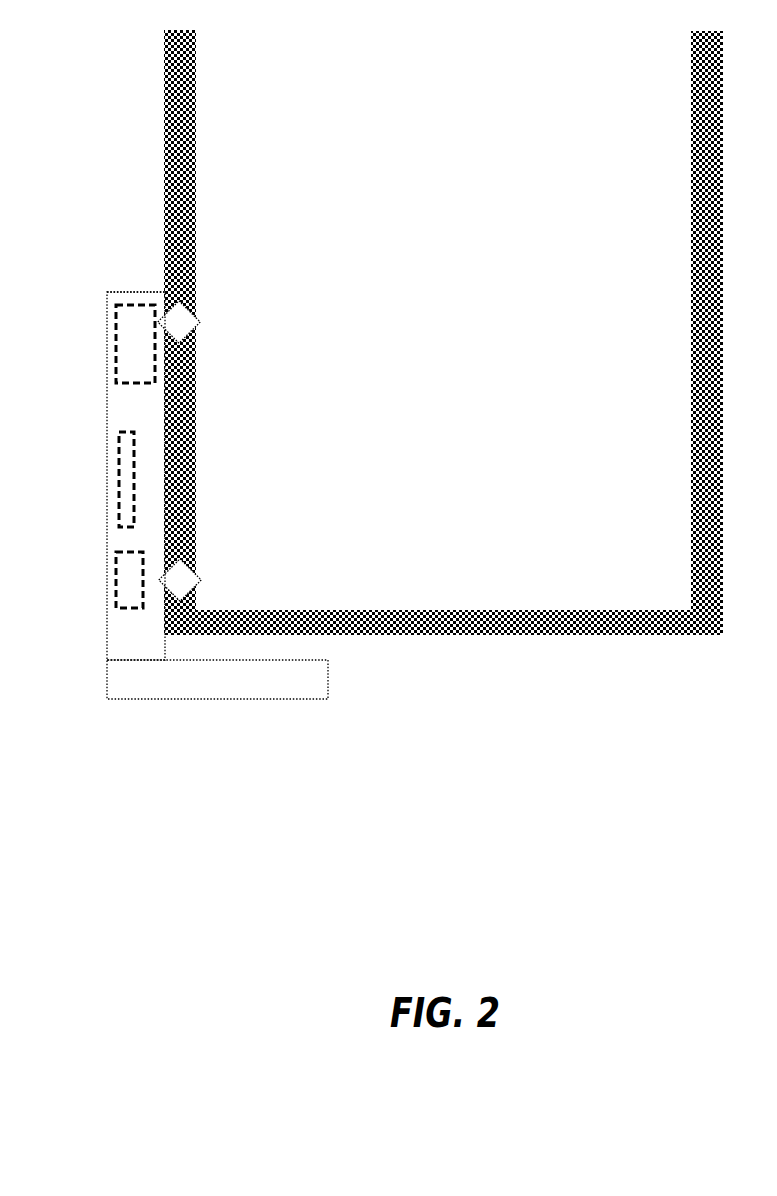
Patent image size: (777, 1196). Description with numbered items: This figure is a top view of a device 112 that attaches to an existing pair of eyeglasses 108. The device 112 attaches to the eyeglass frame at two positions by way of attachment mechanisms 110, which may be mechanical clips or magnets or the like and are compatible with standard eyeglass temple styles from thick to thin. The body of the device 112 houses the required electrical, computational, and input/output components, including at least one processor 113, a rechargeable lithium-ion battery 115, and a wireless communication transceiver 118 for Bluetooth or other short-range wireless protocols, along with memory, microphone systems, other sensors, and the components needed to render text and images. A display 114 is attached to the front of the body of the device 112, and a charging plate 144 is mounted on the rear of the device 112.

The eyeglasses 108 is at (428, 610).
The attachment mechanisms 110 is at (183, 578).
The device 112 is at (127, 407).
The processor 113 is at (125, 583).
The display 114 is at (220, 675).
The rechargeable lithium-ion battery 115 is at (120, 335).
The wireless communication transceiver 118 is at (123, 479).
The charging plate 144 is at (125, 290).